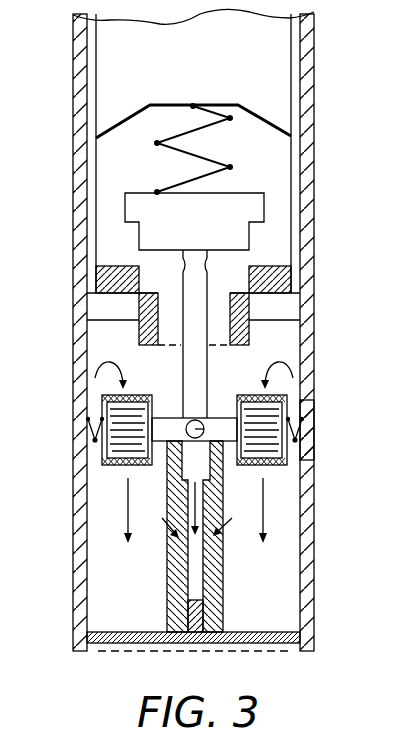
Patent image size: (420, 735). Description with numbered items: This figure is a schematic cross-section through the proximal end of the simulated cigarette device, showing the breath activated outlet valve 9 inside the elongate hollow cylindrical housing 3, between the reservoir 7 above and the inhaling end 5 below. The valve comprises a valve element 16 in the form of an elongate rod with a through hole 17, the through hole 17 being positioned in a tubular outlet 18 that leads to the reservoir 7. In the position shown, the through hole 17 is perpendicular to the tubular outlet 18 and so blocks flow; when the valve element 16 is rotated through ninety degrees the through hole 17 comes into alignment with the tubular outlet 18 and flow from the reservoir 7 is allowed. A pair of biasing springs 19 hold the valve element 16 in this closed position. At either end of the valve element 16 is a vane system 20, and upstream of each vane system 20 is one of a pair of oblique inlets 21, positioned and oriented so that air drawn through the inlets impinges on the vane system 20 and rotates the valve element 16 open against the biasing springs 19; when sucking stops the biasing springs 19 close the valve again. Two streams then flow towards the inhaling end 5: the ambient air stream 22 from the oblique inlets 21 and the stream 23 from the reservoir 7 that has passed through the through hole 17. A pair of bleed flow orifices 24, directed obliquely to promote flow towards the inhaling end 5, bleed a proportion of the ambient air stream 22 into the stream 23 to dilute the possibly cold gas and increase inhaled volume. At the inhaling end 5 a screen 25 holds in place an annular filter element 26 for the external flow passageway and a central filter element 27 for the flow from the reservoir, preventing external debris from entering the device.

The elongate hollow cylindrical housing 3 is at (315, 85).
The inhaling end 5 is at (65, 550).
The reservoir 7 is at (199, 69).
The breath activated outlet valve 9 is at (326, 425).
The valve element 16 is at (225, 428).
The through hole 17 is at (186, 421).
The tubular outlet 18 is at (193, 360).
The biasing springs 19 is at (82, 436).
The vane system 20 is at (112, 468).
The oblique inlets 21 is at (77, 368).
The ambient air stream 22 is at (128, 522).
The stream from the reservoir 23 is at (206, 505).
The bleed flow orifices 24 is at (173, 543).
The screen 25 is at (277, 652).
The annular filter element 26 is at (142, 632).
The central filter element 27 is at (224, 618).